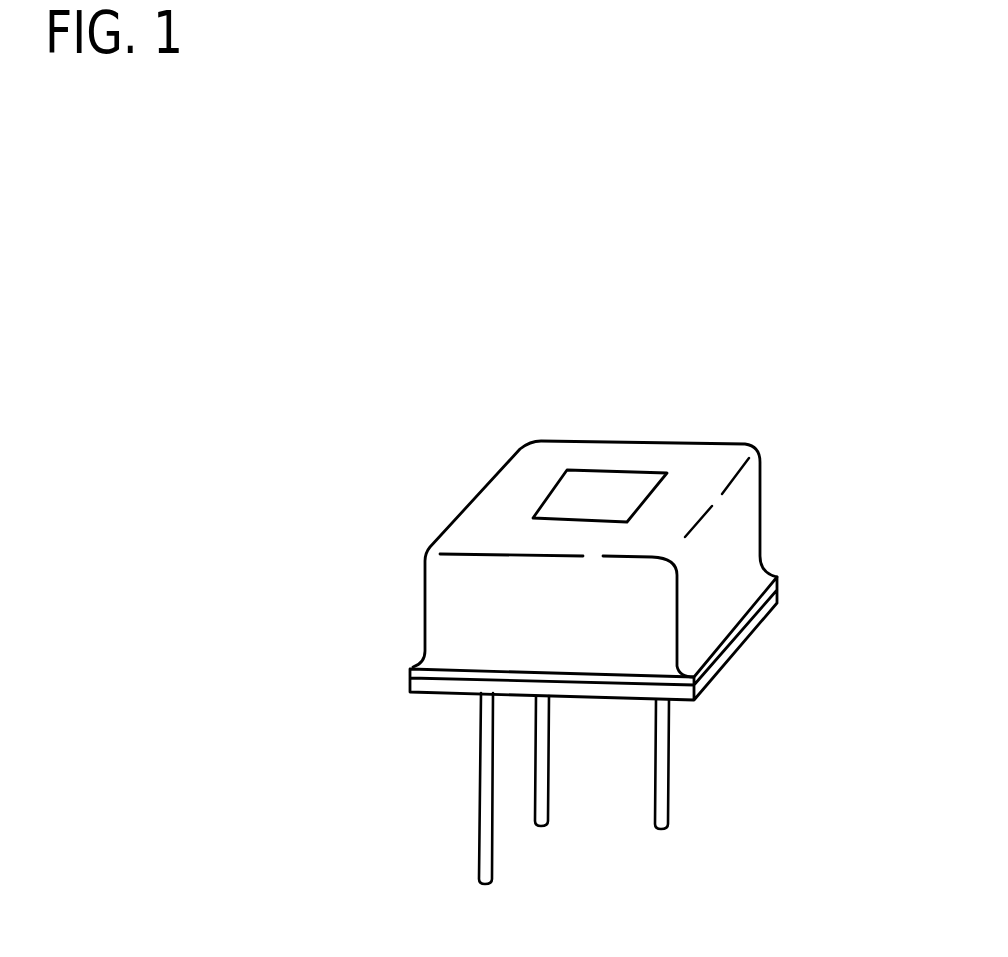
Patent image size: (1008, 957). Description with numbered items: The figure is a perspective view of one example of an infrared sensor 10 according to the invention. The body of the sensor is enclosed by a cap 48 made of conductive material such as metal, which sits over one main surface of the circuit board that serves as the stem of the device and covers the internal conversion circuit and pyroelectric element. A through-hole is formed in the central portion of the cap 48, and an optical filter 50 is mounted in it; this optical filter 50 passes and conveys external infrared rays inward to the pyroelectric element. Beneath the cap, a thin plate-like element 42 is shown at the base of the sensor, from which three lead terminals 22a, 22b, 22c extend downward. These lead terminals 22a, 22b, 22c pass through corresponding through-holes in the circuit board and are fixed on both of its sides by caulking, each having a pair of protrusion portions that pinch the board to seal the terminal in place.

The infrared sensor 10 is at (305, 298).
The cap 48 is at (731, 530).
The optical filter 50 is at (600, 490).
The base plate (stem) 42 is at (738, 640).
The lead terminal 22a is at (543, 795).
The lead terminal 22b is at (663, 795).
The lead terminal 22c is at (483, 860).